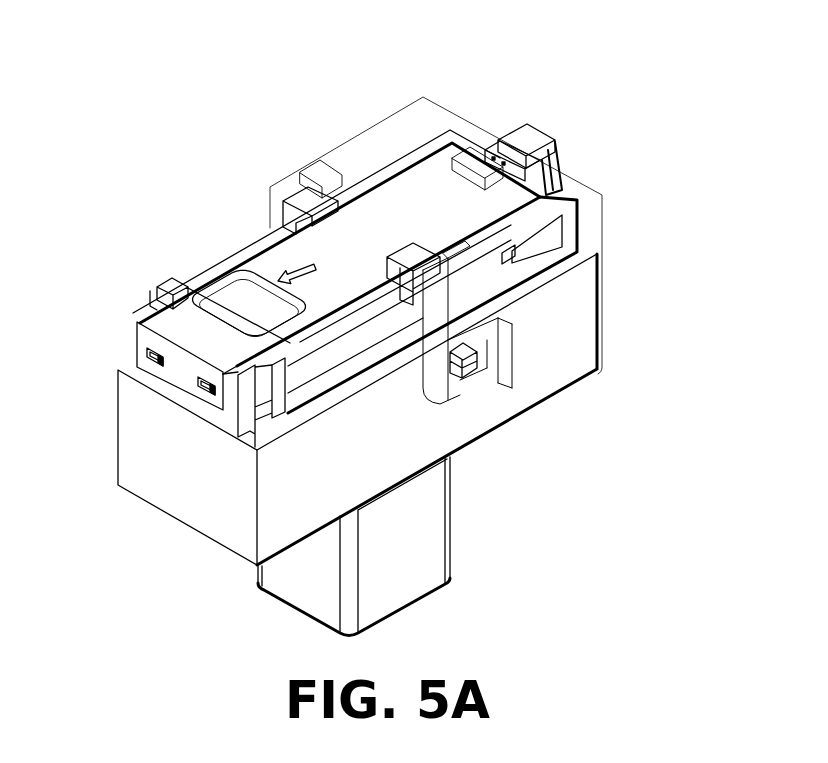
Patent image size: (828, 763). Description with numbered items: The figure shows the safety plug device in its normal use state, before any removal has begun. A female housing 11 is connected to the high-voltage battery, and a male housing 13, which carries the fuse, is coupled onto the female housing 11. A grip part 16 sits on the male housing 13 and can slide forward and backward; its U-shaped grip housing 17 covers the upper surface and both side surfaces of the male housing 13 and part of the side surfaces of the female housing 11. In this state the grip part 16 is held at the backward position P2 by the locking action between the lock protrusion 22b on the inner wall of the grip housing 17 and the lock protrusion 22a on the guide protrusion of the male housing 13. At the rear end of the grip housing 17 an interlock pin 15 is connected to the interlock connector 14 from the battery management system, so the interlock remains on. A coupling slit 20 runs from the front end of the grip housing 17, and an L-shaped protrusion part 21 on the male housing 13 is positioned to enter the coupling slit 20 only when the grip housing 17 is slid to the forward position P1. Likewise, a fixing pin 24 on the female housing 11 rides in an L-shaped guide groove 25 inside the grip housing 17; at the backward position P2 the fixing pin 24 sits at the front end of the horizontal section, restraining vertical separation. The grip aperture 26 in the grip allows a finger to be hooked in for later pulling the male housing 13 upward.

The female housing 11 is at (268, 480).
The male housing 13 is at (255, 410).
The interlock connector 14 is at (537, 133).
The interlock pin 15 is at (480, 152).
The grip part 16 is at (377, 113).
The grip housing 17 is at (432, 120).
The coupling slit 20 is at (328, 170).
The protrusion part 21 is at (308, 195).
The lock protrusion 22a is at (508, 253).
The lock protrusion 22b is at (535, 235).
The fixing pin 24 is at (477, 365).
The guide groove 25 is at (492, 355).
The grip aperture 26 is at (240, 297).
The forward position P1 is at (237, 207).
The backward position P2 is at (262, 183).